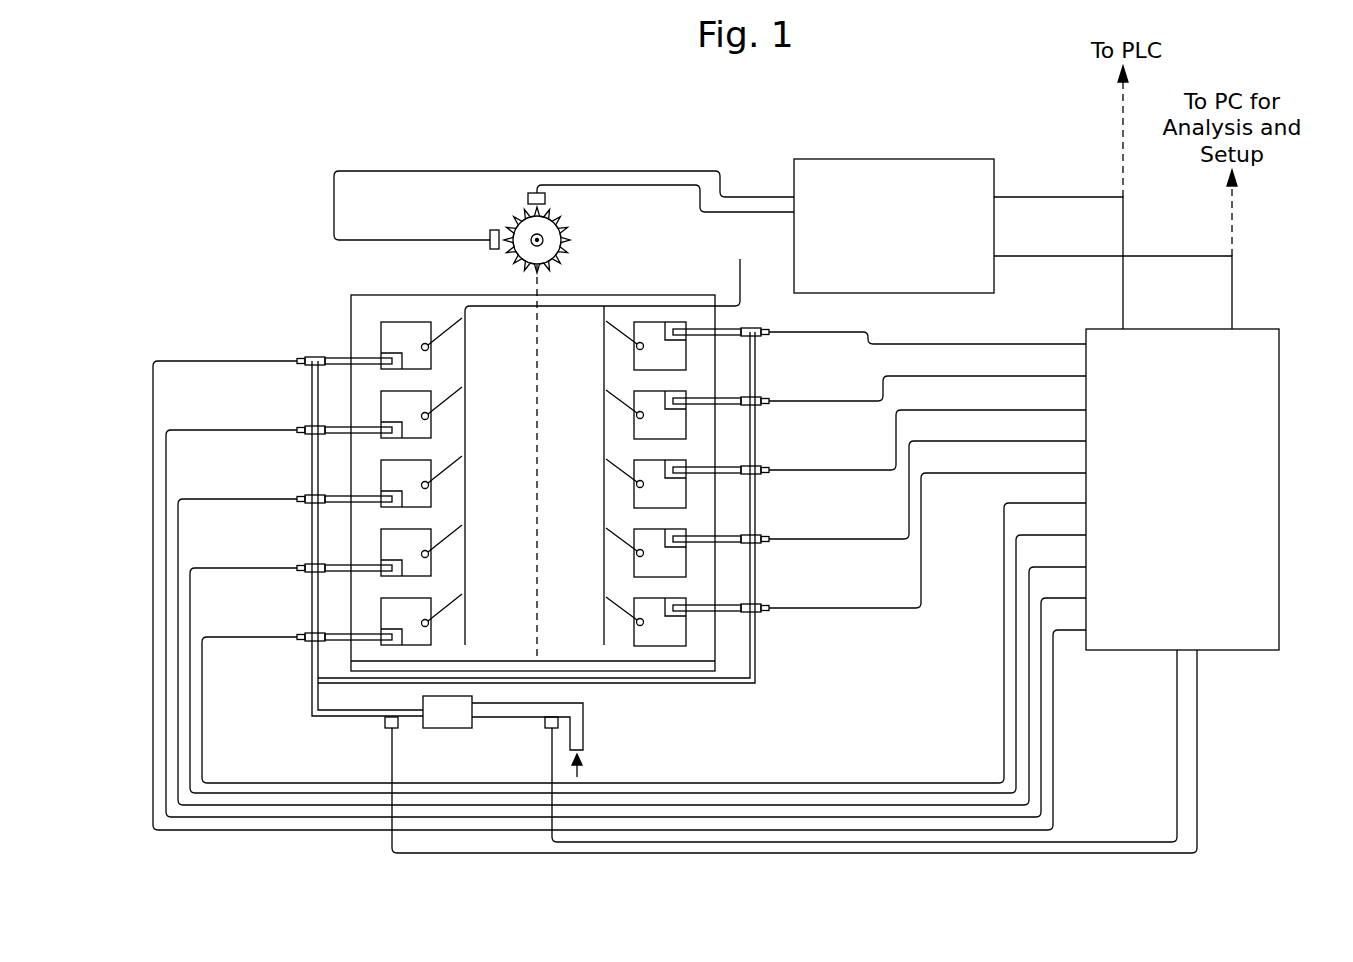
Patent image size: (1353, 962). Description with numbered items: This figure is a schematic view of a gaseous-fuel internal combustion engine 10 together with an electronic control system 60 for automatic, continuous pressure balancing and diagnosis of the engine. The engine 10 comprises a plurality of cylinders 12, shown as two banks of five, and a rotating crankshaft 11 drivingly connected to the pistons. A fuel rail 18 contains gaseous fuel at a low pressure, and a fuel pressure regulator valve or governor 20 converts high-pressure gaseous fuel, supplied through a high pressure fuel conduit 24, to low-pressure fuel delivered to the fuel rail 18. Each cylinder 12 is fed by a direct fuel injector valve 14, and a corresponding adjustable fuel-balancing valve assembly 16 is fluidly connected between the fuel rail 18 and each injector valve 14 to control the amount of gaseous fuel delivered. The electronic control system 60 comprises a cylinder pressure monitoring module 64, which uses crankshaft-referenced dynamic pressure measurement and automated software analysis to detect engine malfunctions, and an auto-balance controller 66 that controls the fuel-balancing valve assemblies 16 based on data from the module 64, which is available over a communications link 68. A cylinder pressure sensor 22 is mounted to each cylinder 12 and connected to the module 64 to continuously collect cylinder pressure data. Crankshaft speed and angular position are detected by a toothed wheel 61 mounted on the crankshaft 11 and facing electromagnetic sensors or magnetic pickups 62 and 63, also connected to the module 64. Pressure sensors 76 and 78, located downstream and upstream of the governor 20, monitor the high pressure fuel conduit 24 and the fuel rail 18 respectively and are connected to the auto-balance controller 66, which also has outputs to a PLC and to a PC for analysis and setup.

The internal combustion engine 10 is at (739, 714).
The crankshaft 11 is at (545, 240).
The cylinder 12 is at (415, 369).
The direct fuel injector valve 14 is at (390, 352).
The adjustable fuel-balancing valve assembly 16 is at (302, 356).
The fuel rail 18 is at (312, 658).
The fuel pressure regulator valve 20 is at (449, 728).
The cylinder pressure sensor 22 is at (430, 348).
The high pressure fuel conduit 24 is at (583, 731).
The electronic control system 60 is at (940, 611).
The toothed wheel 61 is at (557, 258).
The electromagnetic sensor 62 is at (528, 198).
The second sensor 63 is at (493, 249).
The cylinder pressure monitoring module 64 is at (889, 159).
The auto-balance controller 66 is at (1279, 478).
The communications link 68 is at (1072, 197).
The pressure sensor 76 is at (545, 722).
The pressure sensor 78 is at (385, 722).